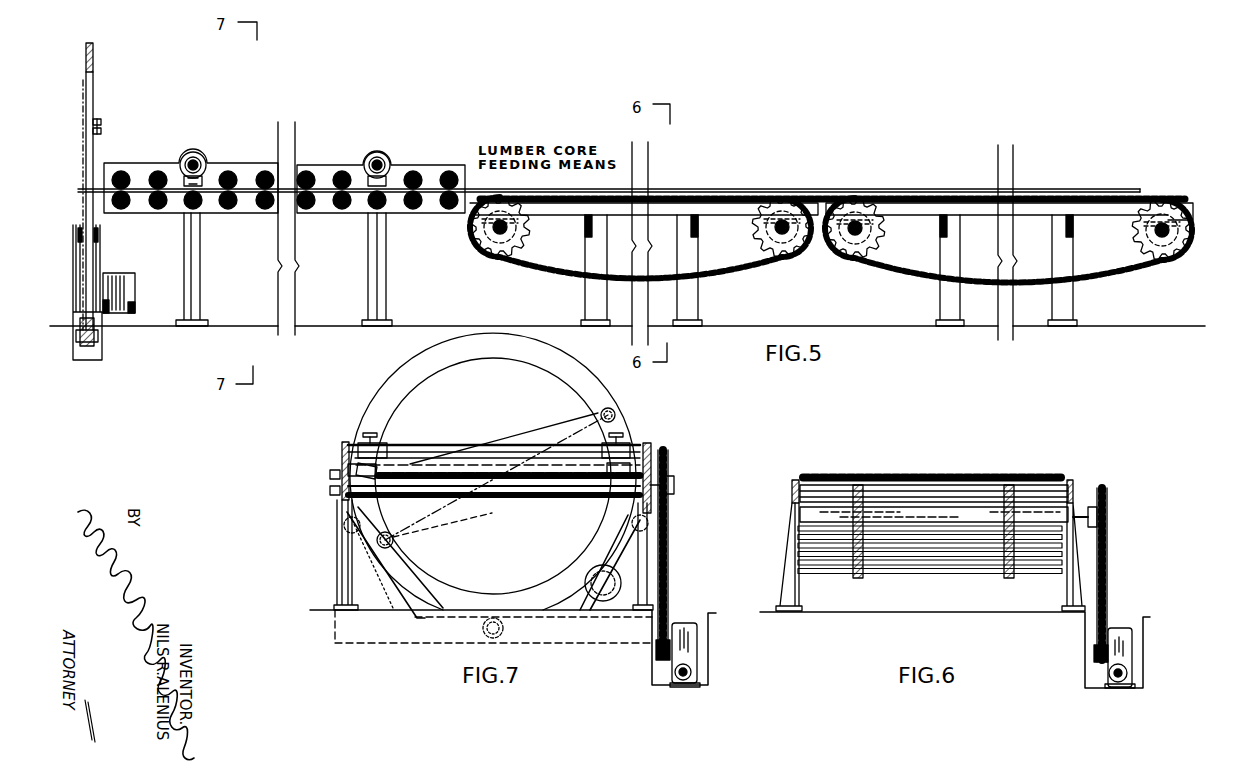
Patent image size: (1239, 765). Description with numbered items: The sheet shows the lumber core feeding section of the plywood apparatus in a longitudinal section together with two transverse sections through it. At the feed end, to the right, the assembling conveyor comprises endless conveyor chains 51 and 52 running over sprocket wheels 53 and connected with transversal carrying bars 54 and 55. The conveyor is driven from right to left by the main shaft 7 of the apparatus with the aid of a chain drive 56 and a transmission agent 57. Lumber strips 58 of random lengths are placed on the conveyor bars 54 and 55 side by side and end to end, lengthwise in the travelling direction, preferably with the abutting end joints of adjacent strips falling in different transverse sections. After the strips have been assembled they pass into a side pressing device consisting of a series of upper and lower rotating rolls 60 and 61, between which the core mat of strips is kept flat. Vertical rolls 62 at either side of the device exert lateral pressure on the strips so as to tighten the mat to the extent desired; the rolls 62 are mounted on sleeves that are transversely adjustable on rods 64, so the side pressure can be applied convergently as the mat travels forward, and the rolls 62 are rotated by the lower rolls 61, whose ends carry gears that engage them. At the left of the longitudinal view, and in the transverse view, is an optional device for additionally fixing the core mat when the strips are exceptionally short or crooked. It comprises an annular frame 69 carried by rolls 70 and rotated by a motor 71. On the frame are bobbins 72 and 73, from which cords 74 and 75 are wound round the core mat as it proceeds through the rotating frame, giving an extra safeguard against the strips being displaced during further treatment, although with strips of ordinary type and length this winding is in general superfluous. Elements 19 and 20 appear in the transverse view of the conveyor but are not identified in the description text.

In FIG. 5, the annular frame 69 is at (93, 66).
In FIG. 7, the annular frame 69 is at (372, 420).
In FIG. 5, the cord 74 is at (98, 148).
In FIG. 7, the cord 74 is at (508, 440).
In FIG. 5, the vertical rolls 62 is at (182, 166).
In FIG. 5, the rods 64 is at (196, 156).
In FIG. 5, the upper rotating rolls 60 is at (232, 170).
In FIG. 5, the lower rotating rolls 61 is at (199, 206).
In FIG. 5, the rolls 70 is at (88, 350).
In FIG. 7, the rolls 70 is at (335, 520).
In FIG. 5, the motor 71 is at (132, 312).
In FIG. 5, the transversal carrying bar 55 is at (670, 197).
In FIG. 5, the endless conveyor chain 52 is at (757, 198).
In FIG. 6, the endless conveyor chain 52 is at (853, 578).
In FIG. 5, the lumber strips 58 is at (847, 193).
In FIG. 6, the lumber strips 58 is at (978, 474).
In FIG. 5, the transversal carrying bar 54 is at (1058, 198).
In FIG. 5, the endless conveyor chain 51 is at (1152, 205).
In FIG. 5, the sprocket wheels 53 is at (493, 240).
In FIG. 7, the bobbin 73 is at (393, 538).
In FIG. 7, the cord 75 is at (507, 508).
In FIG. 7, the chain drive 56 is at (668, 545).
In FIG. 7, the transmission agent 57 is at (687, 627).
In FIG. 7, the bobbin 72 is at (655, 388).
In FIG. 6, the drive chain 19 is at (1105, 567).
In FIG. 6, the motor 20 is at (1122, 635).
In FIG. 6, the main shaft 7 is at (1128, 670).